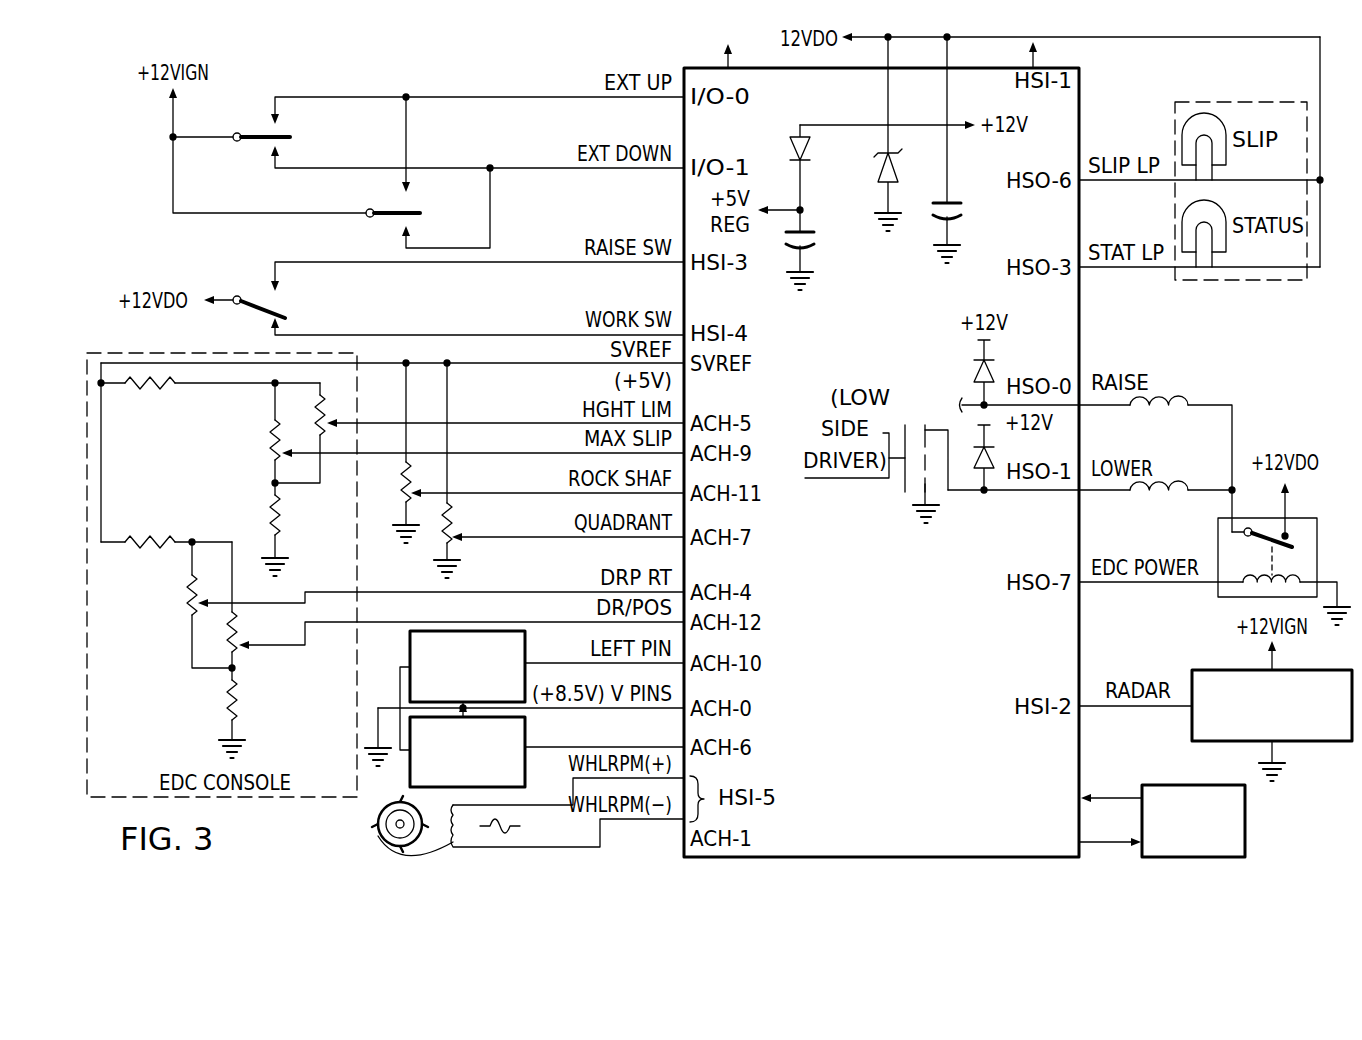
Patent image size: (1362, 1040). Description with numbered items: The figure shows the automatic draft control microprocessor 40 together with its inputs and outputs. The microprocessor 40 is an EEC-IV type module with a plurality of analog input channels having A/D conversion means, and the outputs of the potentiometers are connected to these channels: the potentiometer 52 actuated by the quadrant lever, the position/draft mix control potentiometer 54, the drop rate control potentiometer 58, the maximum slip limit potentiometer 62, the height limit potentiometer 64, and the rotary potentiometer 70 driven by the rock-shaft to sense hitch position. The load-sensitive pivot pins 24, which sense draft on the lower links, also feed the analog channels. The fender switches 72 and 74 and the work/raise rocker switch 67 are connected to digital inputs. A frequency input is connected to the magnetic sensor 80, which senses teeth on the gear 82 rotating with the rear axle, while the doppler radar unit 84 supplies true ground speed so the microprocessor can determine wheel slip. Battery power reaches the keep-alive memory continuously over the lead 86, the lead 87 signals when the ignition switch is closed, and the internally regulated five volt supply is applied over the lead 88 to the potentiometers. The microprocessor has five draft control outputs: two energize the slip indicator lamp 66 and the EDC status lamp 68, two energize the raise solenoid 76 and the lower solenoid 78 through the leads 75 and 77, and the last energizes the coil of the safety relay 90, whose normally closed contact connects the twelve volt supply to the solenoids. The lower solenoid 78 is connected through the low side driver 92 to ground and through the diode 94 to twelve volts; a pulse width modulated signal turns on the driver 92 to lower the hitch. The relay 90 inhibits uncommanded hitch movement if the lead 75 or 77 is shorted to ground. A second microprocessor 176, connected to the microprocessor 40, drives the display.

The pivot pins 24 is at (410, 643).
The microprocessor 40 is at (1083, 775).
The potentiometer 52 is at (462, 520).
The position/draft mix control potentiometer 54 is at (250, 628).
The drop rate control potentiometer 58 is at (178, 586).
The maximum slip limit potentiometer 62 is at (258, 444).
The height limit potentiometer 64 is at (338, 404).
The slip indicator lamp 66 is at (1218, 120).
The work/raise rocker switch 67 is at (298, 300).
The EDC status lamp 68 is at (1182, 212).
The rotary potentiometer 70 is at (392, 498).
The fender switch 72 is at (300, 128).
The fender switch 74 is at (418, 192).
The lead 75 is at (1104, 407).
The raise solenoid 76 is at (1170, 402).
The lead 77 is at (1105, 493).
The lower solenoid 78 is at (1165, 487).
The magnetic sensor 80 is at (400, 850).
The gear 82 is at (376, 822).
The doppler radar unit 84 is at (1200, 668).
The lead 86 is at (722, 50).
The lead 87 is at (1040, 48).
The lead 88 is at (476, 364).
The safety relay 90 is at (1226, 600).
The low side driver 92 is at (884, 486).
The diode 94 is at (975, 478).
The second microprocessor 176 is at (1247, 832).